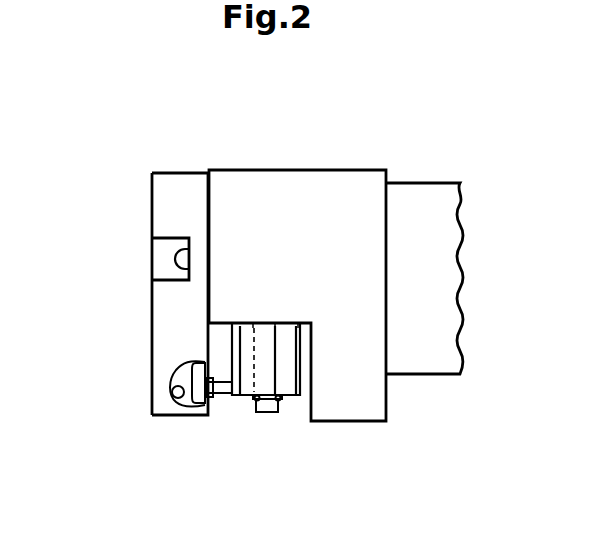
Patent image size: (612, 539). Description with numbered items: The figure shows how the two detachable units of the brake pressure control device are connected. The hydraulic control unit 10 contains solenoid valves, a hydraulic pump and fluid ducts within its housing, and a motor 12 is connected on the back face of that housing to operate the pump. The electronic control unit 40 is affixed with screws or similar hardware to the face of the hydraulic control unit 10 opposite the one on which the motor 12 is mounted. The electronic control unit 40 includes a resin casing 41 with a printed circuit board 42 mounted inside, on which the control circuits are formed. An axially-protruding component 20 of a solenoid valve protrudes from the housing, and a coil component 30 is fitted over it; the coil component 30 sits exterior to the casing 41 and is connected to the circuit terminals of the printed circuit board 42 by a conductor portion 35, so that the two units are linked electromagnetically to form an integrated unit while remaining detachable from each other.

The hydraulic control unit 10 is at (315, 170).
The motor 12 is at (437, 182).
The axially-protruding component 20 is at (272, 413).
The coil component 30 is at (242, 397).
The conductor portion 35 is at (220, 395).
The electronic control unit 40 is at (139, 255).
The casing 41 is at (152, 328).
The printed circuit board 42 is at (172, 394).